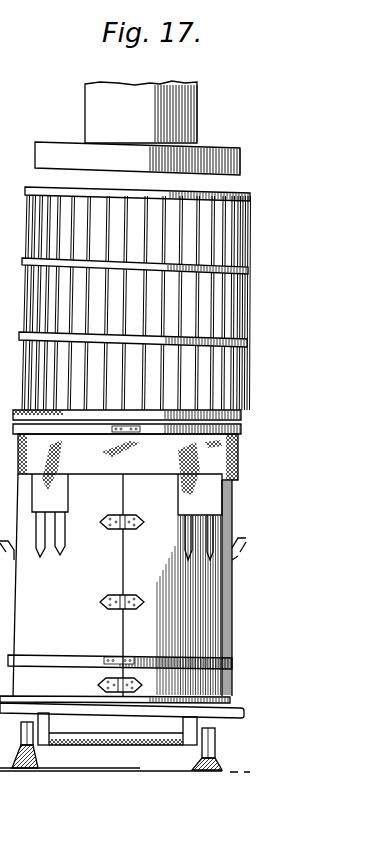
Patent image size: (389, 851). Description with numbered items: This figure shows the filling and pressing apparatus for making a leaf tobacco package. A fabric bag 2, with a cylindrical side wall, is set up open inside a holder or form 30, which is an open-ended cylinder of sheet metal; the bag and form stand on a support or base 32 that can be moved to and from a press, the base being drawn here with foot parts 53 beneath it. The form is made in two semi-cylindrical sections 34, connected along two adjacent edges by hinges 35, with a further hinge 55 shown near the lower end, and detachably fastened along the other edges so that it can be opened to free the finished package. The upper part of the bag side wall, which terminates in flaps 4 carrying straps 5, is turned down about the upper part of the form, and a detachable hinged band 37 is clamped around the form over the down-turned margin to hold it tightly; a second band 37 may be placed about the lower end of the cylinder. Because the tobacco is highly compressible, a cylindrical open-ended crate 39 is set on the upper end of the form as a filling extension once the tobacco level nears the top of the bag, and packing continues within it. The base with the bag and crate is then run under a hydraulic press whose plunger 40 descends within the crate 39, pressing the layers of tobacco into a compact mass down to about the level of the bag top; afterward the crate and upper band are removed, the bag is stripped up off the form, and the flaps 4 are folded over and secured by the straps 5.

The bag 2 is at (128, 464).
The flaps 4 is at (62, 500).
The straps 5 is at (40, 555).
The holder or form 30 is at (229, 543).
The support or base 32 is at (244, 713).
The semi-cylindrical sections 34 is at (212, 625).
The hinges 35 is at (119, 530).
The detachable hinged bands 37 is at (241, 432).
The crate 39 is at (237, 232).
The plunger 40 is at (240, 149).
The foot 53 is at (220, 762).
The lower hinge 55 is at (98, 680).